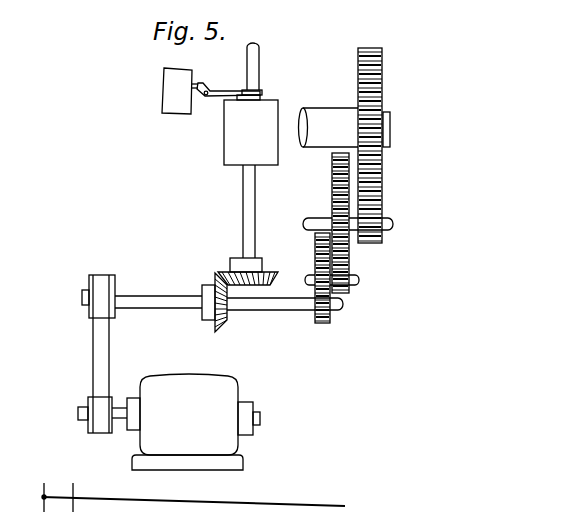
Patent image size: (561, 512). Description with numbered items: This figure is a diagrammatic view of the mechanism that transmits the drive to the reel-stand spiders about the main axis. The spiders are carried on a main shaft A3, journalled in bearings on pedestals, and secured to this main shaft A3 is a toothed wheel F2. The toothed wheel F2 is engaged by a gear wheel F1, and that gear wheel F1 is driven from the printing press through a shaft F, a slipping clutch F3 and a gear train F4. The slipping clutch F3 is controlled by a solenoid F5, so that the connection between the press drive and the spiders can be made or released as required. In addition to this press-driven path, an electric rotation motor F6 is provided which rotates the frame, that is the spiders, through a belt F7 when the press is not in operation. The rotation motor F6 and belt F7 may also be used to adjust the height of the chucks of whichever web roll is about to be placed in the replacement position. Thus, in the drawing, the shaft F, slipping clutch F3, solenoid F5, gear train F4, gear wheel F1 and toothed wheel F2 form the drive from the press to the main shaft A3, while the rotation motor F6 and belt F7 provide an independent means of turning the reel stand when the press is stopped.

The shaft F is at (251, 63).
The gear wheel F1 is at (378, 241).
The toothed wheel F2 is at (377, 172).
The slipping clutch F3 is at (238, 153).
The gear train F4 is at (350, 290).
The solenoid F5 is at (172, 93).
The rotation motor F6 is at (230, 385).
The belt F7 is at (102, 348).
The main shaft A3 is at (335, 117).